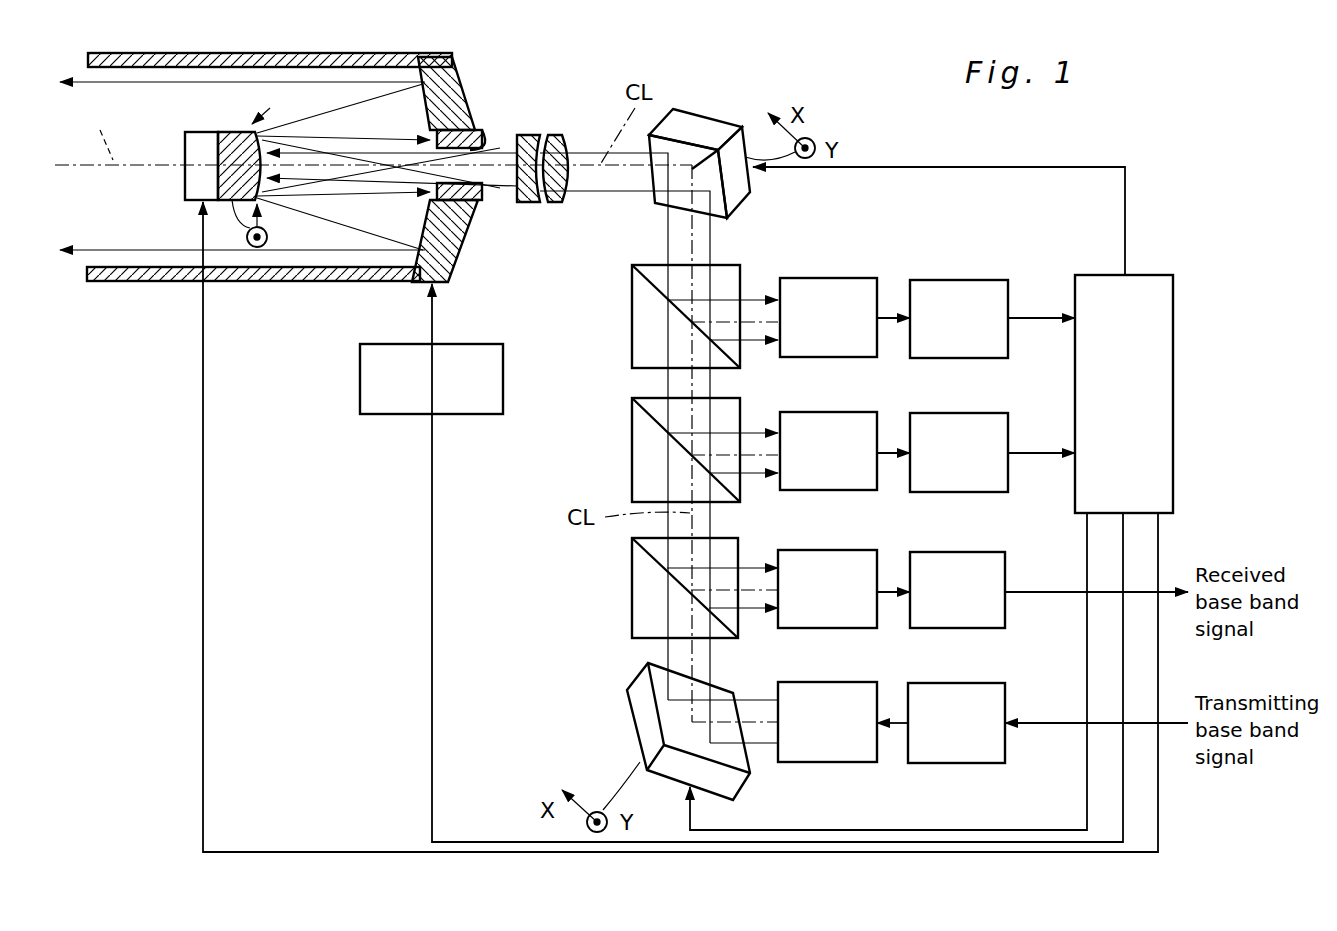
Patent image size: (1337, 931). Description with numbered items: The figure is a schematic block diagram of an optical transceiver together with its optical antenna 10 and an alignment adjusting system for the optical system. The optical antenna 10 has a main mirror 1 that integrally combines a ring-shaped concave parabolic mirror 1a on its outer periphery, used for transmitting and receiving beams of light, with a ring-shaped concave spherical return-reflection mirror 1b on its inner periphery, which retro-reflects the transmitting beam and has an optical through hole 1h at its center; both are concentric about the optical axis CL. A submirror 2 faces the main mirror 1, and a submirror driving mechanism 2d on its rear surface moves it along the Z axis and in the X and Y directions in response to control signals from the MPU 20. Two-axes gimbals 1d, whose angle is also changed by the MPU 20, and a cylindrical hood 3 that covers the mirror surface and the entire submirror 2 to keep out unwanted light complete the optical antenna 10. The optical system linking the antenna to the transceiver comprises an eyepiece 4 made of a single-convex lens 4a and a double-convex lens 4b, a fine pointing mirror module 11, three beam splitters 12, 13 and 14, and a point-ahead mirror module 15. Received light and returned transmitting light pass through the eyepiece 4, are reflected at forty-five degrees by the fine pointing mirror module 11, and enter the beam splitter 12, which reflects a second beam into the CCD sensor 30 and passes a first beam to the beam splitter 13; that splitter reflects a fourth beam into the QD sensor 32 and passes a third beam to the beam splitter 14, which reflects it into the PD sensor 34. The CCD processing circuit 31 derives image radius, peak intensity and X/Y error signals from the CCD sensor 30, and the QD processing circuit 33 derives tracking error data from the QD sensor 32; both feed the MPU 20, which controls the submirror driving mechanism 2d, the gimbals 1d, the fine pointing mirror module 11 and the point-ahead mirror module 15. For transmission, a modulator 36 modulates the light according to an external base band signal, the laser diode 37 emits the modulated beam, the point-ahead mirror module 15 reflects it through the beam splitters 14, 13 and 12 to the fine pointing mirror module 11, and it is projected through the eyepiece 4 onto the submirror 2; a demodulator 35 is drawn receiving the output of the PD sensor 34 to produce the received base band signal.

The main mirror 1 is at (471, 152).
The parabolic mirror 1a is at (422, 100).
The spherical return-reflection mirror 1b is at (437, 135).
The two-axes gimbals 1d is at (503, 370).
The optical through hole 1h is at (487, 140).
The submirror 2 is at (252, 123).
The submirror driving mechanism 2d is at (187, 143).
The hood 3 is at (275, 281).
The eyepiece 4 is at (543, 127).
The single-convex lens 4a is at (523, 135).
The double-convex lens 4b is at (560, 135).
The optical antenna 10 is at (128, 211).
The fine pointing mirror module (FPM) 11 is at (703, 115).
The beam splitter 12 is at (632, 322).
The beam splitter 13 is at (632, 453).
The beam splitter 14 is at (632, 603).
The point-ahead mirror module (PAM) 15 is at (630, 720).
The MPU 20 is at (1135, 275).
The CCD sensor 30 is at (832, 278).
The CCD processing circuit 31 is at (960, 280).
The QD sensor 32 is at (832, 412).
The QD processing circuit 33 is at (960, 413).
The PD sensor 34 is at (832, 550).
The demodulator 35 is at (960, 552).
The modulator 36 is at (960, 683).
The laser diode 37 is at (832, 682).